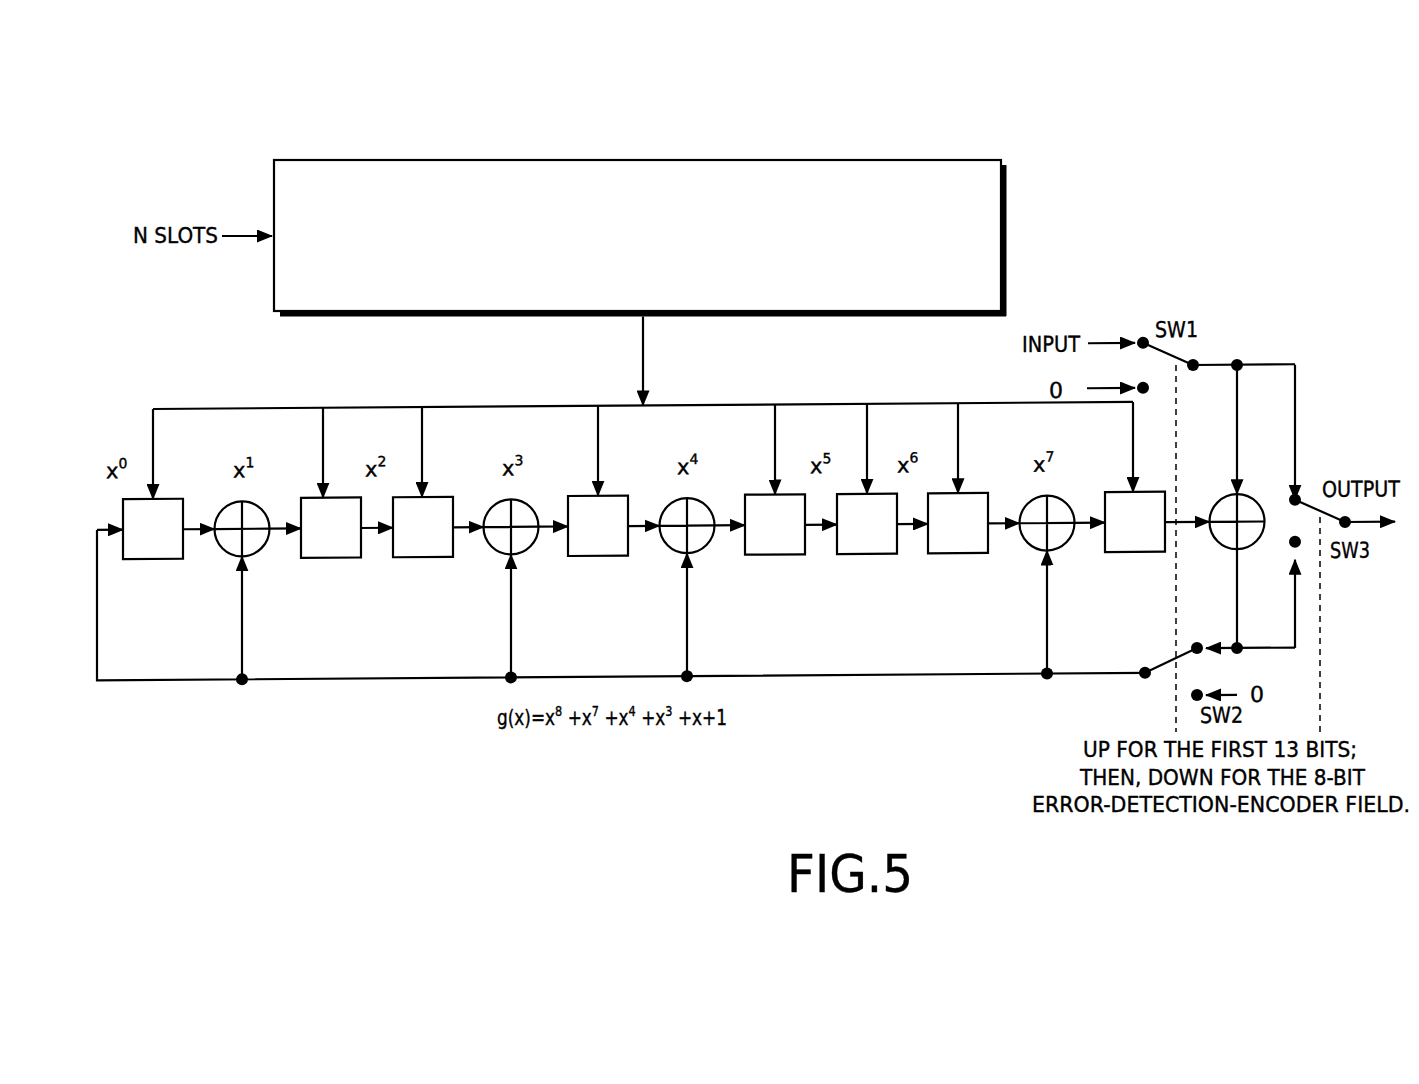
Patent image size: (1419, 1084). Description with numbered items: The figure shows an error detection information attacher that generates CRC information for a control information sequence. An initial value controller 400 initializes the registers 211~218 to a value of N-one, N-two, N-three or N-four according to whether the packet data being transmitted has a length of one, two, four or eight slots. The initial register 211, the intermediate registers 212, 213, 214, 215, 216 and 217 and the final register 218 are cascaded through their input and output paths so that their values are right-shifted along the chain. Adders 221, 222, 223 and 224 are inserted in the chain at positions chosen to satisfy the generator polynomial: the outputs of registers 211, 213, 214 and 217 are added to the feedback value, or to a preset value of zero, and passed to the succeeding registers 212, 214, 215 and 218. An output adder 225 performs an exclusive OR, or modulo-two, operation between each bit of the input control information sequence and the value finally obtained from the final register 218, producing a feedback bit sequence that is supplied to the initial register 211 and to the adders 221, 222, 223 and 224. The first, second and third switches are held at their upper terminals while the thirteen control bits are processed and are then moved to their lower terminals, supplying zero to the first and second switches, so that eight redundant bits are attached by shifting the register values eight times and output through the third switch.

The initial value controller 400 is at (632, 158).
The initial register 211 is at (156, 559).
The intermediate register 212 is at (334, 559).
The intermediate register 213 is at (425, 559).
The intermediate register 214 is at (601, 559).
The intermediate register 215 is at (778, 559).
The intermediate register 216 is at (870, 559).
The intermediate register 217 is at (961, 559).
The final register 218 is at (1138, 559).
The adder 221 is at (258, 551).
The adder 222 is at (527, 551).
The adder 223 is at (703, 551).
The adder 224 is at (1063, 551).
The output adder 225 is at (1255, 549).